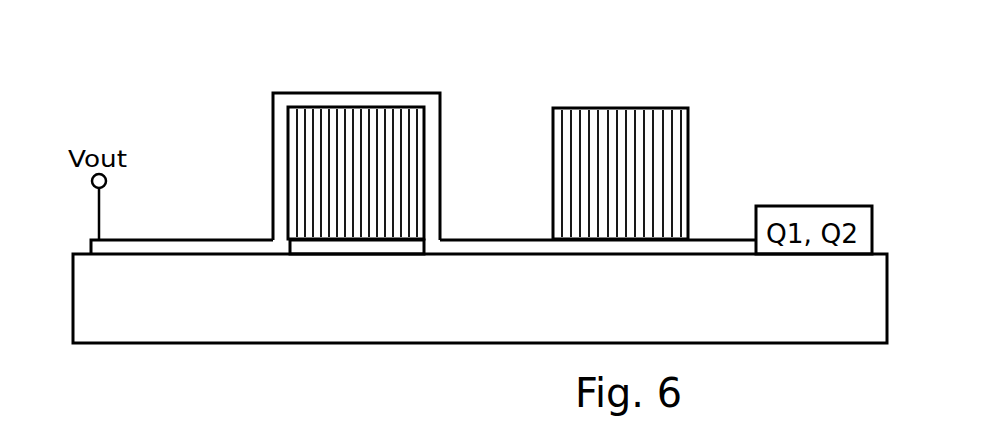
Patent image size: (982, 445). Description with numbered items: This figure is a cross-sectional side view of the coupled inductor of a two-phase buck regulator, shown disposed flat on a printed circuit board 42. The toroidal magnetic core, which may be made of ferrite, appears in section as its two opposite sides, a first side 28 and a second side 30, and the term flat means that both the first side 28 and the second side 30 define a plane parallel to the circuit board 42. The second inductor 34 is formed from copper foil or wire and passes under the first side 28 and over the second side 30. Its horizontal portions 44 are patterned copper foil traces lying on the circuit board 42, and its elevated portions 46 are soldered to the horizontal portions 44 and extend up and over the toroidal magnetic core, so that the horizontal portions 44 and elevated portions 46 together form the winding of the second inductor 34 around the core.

The first side 28 is at (620, 173).
The second side 30 is at (356, 180).
The second inductor 34 is at (446, 80).
The printed circuit board 42 is at (480, 298).
The horizontal portions 44 is at (193, 246).
The elevated portions 46 is at (358, 97).